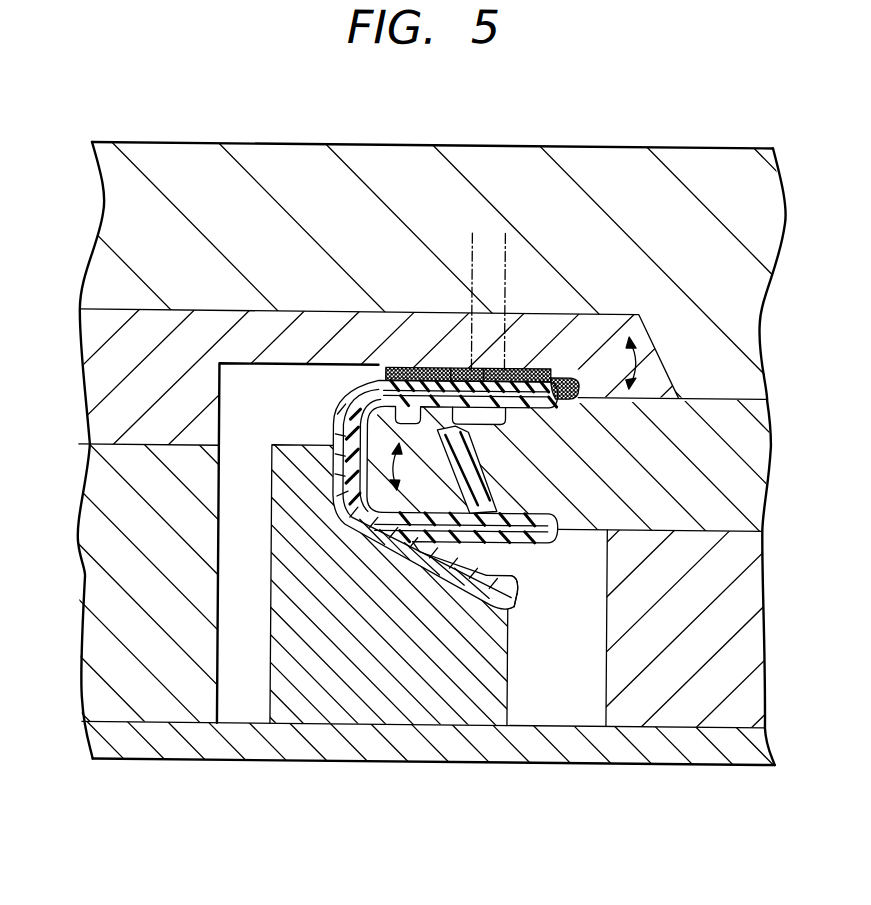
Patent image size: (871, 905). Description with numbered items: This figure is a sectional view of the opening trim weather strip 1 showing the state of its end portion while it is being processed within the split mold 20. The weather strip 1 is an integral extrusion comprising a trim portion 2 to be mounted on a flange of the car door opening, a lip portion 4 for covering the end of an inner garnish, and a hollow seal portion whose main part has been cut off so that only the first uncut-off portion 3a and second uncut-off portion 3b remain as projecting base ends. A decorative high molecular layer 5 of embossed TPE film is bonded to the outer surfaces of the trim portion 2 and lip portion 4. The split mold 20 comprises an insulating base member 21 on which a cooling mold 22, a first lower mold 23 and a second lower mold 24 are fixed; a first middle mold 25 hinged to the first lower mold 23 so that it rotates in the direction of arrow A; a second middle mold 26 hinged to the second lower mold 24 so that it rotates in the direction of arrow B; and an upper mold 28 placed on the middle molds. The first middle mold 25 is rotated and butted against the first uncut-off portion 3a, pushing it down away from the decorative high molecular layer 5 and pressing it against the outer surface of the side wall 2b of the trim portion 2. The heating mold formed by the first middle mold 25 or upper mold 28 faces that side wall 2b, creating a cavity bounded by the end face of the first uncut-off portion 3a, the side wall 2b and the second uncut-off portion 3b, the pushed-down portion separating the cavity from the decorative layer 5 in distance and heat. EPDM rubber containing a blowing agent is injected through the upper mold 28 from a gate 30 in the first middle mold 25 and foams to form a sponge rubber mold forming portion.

The opening trim weather strip 1 is at (445, 384).
The trim portion 2 is at (440, 499).
The side wall 2b is at (479, 407).
The first uncut-off portion 3a is at (468, 374).
The second uncut-off portion 3b is at (565, 388).
The lip portion 4 is at (502, 590).
The decorative high molecular layer 5 is at (445, 489).
The split mold 20 is at (246, 136).
The insulating base member 21 is at (584, 723).
The cooling mold 22 is at (392, 705).
The first lower mold 23 is at (176, 709).
The second lower mold 24 is at (687, 706).
The first middle mold 25 is at (107, 380).
The second middle mold 26 is at (764, 449).
The upper mold 28 is at (682, 156).
The gate 30 is at (514, 259).